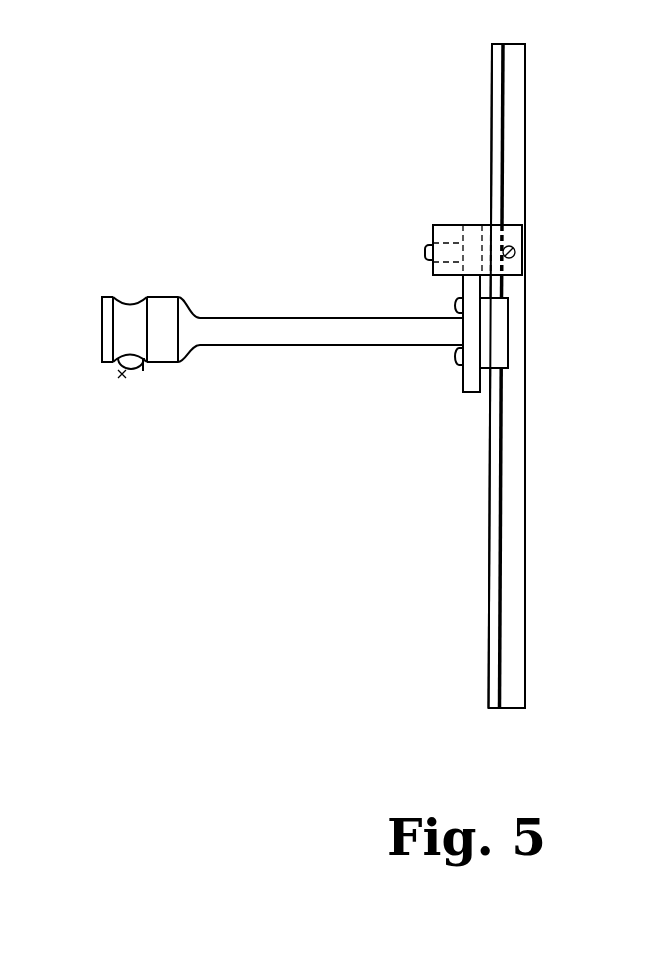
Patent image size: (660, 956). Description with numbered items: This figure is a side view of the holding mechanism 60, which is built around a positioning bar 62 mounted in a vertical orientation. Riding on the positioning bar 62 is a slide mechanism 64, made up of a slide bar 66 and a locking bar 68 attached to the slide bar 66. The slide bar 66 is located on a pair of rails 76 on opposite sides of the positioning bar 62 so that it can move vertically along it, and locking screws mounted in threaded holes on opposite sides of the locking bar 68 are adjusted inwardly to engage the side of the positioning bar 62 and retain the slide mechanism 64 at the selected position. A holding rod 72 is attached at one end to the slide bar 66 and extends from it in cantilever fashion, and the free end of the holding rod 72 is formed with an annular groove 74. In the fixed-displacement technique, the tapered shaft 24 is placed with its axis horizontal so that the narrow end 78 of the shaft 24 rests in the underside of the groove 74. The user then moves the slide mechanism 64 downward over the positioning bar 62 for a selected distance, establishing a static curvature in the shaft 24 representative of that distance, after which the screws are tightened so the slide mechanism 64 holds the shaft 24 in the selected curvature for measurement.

The holding mechanism 60 is at (438, 100).
The positioning bar 62 is at (508, 515).
The slide mechanism 64 is at (450, 222).
The slide bar 66 is at (470, 386).
The locking bar 68 is at (433, 233).
The holding rod 72 is at (293, 335).
The annular groove 74 is at (135, 298).
The rails 76 is at (490, 592).
The narrow end 78 is at (118, 373).
The shaft 24 is at (141, 391).